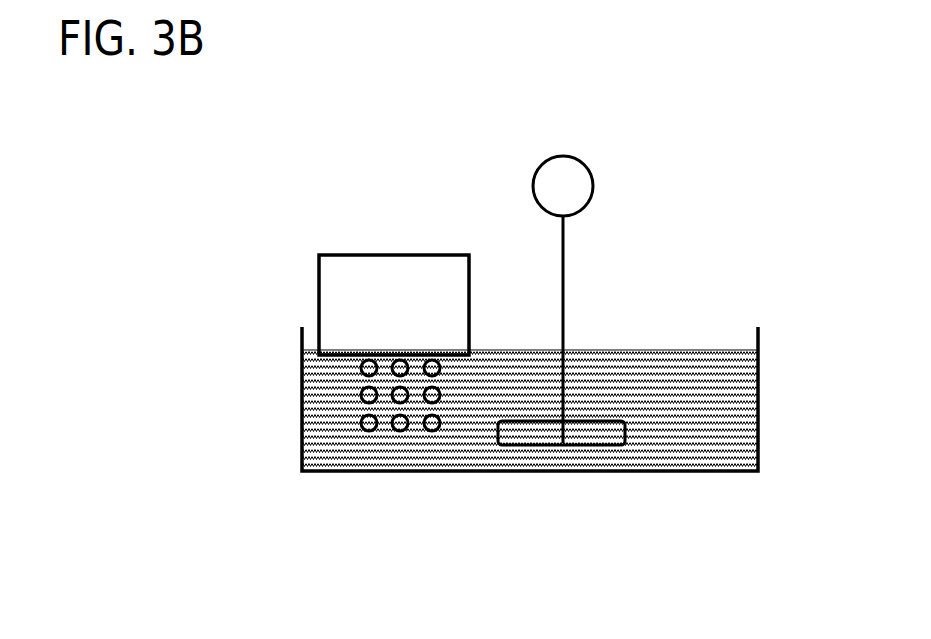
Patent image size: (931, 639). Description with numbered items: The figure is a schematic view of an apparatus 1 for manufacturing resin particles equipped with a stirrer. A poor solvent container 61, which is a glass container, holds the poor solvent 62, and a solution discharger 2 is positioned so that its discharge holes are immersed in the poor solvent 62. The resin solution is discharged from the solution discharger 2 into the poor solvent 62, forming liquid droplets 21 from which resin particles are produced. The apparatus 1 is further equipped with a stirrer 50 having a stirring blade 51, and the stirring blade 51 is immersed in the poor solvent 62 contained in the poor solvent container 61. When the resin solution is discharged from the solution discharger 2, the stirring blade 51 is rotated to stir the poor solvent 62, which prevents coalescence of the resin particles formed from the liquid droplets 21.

The apparatus for manufacturing resin particles 1 is at (308, 147).
The solution discharger 2 is at (397, 271).
The liquid droplets 21 is at (360, 398).
The stirrer 50 is at (594, 172).
The stirring blade 51 is at (600, 445).
The poor solvent container 61 is at (758, 345).
The poor solvent 62 is at (680, 443).